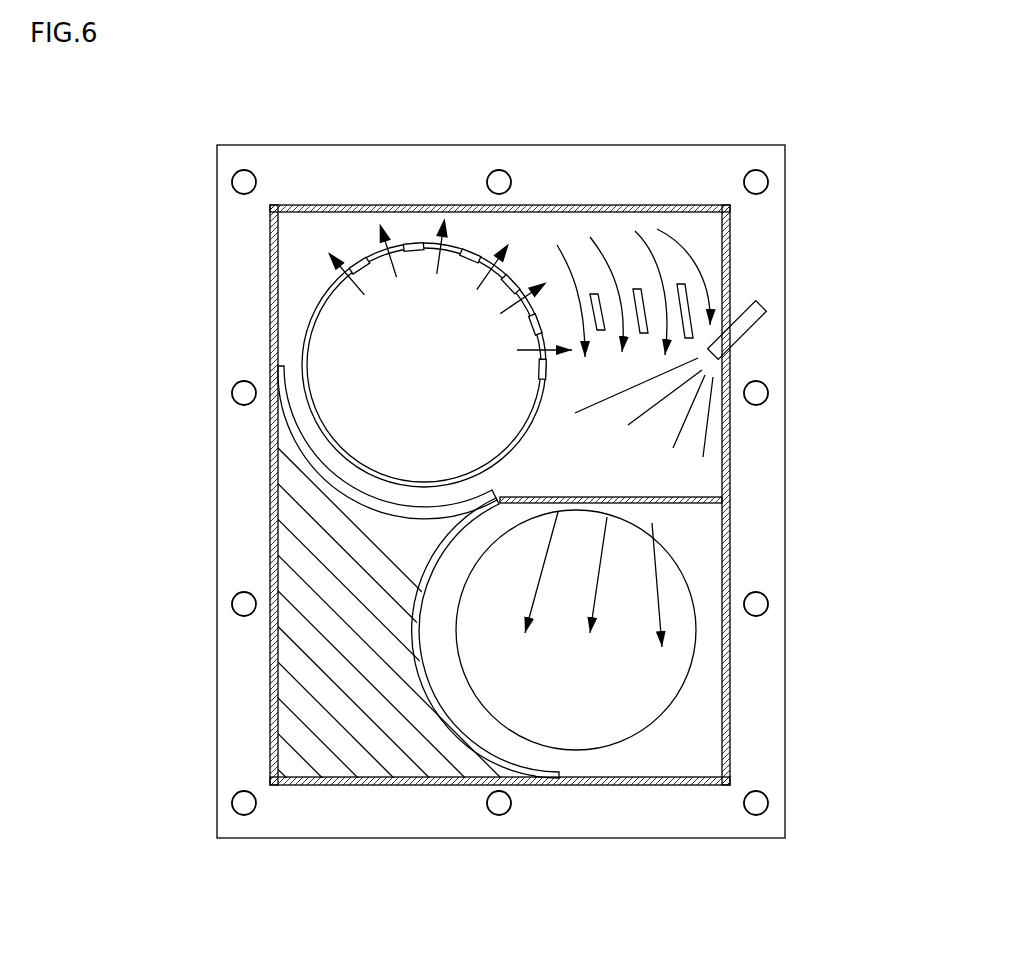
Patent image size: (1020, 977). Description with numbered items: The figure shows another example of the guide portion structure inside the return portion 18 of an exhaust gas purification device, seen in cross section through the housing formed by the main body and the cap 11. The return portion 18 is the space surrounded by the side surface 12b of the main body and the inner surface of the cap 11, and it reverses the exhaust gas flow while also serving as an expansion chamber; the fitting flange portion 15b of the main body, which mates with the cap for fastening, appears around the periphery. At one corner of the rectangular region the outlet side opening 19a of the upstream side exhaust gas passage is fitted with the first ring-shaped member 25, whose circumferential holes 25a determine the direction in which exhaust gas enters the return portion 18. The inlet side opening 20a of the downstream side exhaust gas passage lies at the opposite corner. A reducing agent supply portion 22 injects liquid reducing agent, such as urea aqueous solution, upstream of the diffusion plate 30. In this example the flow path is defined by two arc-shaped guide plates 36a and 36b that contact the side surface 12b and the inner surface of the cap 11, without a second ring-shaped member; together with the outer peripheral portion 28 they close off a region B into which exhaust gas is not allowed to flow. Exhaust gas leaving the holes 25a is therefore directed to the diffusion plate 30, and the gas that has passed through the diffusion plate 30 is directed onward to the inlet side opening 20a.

The cap 11 is at (812, 223).
The side surface 12b is at (687, 732).
The fitting flange portion 15b is at (233, 570).
The return portion 18 is at (556, 235).
The outlet side opening 19a is at (412, 248).
The inlet side opening 20a is at (628, 522).
The reducing agent supply portion 22 is at (728, 333).
The first ring-shaped member 25 is at (302, 343).
The holes 25a is at (438, 262).
The outer peripheral portion 28 is at (274, 632).
The diffusion plate 30 is at (672, 496).
The guide plate 36a is at (312, 463).
The guide plate 36b is at (448, 722).
The region B is at (298, 706).